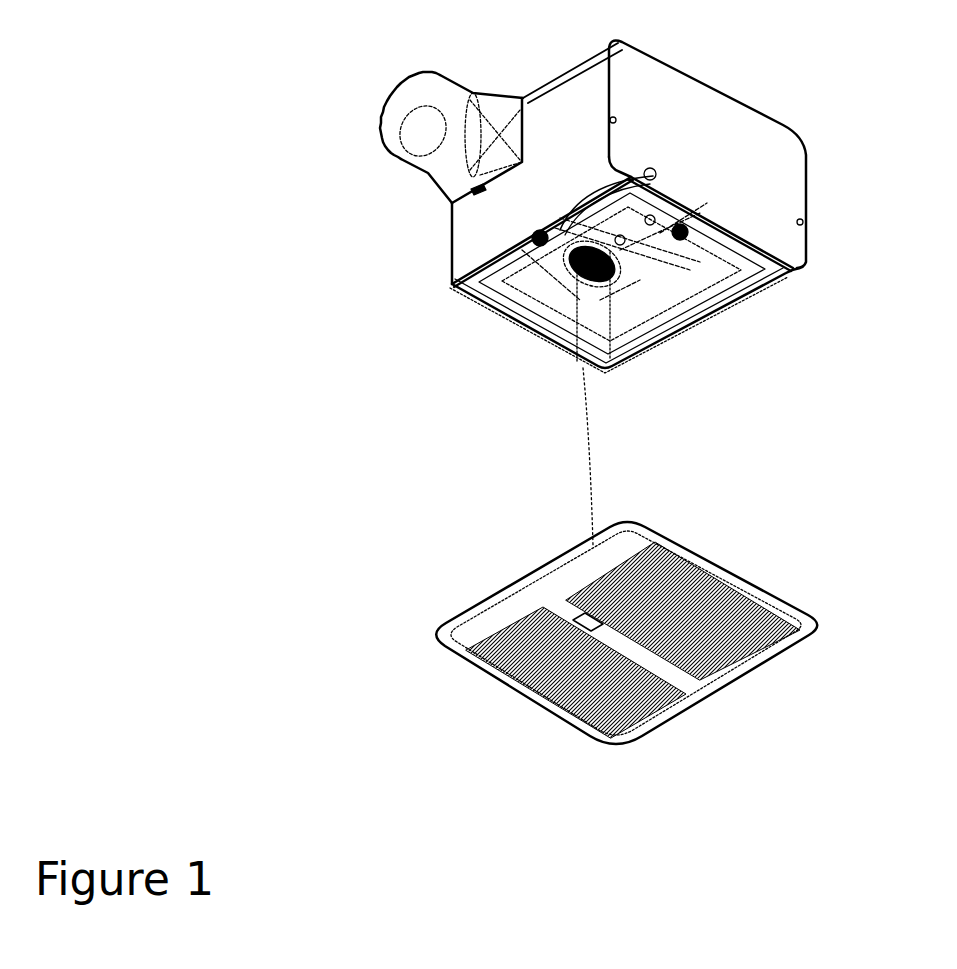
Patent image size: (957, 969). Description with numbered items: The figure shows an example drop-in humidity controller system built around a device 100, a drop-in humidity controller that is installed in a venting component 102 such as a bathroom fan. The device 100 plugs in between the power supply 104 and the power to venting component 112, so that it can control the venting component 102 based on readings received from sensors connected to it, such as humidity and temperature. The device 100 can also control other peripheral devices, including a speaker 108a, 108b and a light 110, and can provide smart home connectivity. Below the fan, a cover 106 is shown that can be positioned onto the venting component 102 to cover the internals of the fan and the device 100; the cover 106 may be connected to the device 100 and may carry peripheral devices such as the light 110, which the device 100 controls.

The device 100 is at (567, 278).
The venting component 102 is at (397, 158).
The power supply 104 is at (641, 286).
The cover 106 is at (672, 640).
The speaker 108a is at (700, 252).
The speaker 108b is at (520, 252).
The light 110 is at (578, 632).
The power to venting component 112 is at (590, 231).